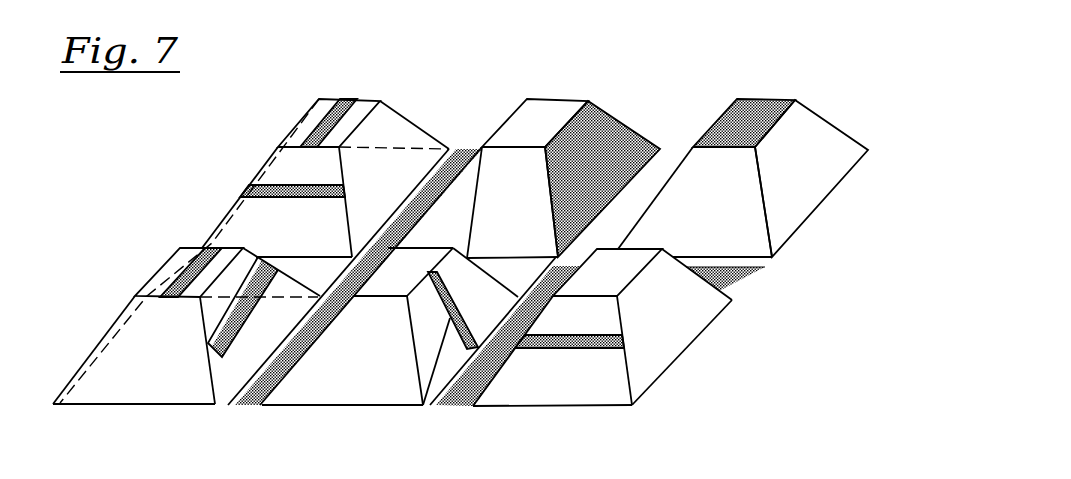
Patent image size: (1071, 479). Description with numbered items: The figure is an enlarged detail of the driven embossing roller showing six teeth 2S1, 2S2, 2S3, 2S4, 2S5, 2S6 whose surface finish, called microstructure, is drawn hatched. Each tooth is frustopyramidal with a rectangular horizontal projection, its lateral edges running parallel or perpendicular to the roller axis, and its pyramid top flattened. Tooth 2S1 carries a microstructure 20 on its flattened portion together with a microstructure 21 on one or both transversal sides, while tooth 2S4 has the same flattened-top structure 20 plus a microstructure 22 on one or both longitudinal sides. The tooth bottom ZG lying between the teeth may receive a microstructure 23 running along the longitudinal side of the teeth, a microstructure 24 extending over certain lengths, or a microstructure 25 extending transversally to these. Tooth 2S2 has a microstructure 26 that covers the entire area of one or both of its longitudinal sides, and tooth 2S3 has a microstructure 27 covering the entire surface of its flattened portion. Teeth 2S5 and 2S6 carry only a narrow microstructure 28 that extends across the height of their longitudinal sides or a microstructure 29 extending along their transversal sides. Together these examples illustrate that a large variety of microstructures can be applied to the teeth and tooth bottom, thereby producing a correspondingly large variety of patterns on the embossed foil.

The microstructure 20 is at (340, 100).
The microstructure 21 is at (247, 192).
The microstructure 22 is at (221, 357).
The microstructure 23 is at (463, 147).
The microstructure 24 is at (462, 406).
The microstructure 25 is at (737, 290).
The microstructure 26 is at (620, 148).
The microstructure 27 is at (790, 100).
The microstructure 28 is at (424, 406).
The microstructure 29 is at (600, 348).
The tooth 2S1 is at (397, 135).
The tooth 2S2 is at (581, 135).
The tooth 2S3 is at (755, 134).
The tooth 2S4 is at (97, 345).
The tooth 2S5 is at (348, 406).
The tooth 2S6 is at (548, 406).
The tooth bottom ZG is at (770, 269).